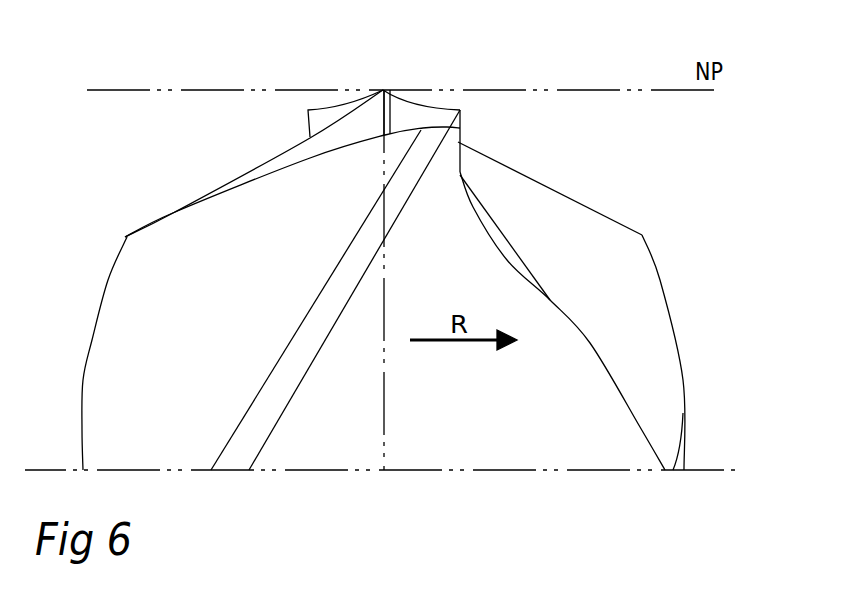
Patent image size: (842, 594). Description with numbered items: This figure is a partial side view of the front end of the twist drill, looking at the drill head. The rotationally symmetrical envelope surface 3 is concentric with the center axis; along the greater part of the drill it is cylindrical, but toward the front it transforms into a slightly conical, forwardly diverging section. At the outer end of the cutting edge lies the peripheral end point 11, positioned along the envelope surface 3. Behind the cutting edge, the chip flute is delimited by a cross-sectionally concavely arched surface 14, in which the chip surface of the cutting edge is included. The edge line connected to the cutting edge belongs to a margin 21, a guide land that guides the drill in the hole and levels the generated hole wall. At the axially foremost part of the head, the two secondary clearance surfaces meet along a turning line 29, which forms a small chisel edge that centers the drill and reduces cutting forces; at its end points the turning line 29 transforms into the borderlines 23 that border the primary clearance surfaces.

The envelope surface 3 is at (178, 330).
The peripheral end point 11 is at (460, 128).
The surface 14 is at (521, 424).
The margin 21 is at (283, 390).
The borderline 23 is at (423, 104).
The turning line 29 is at (383, 90).